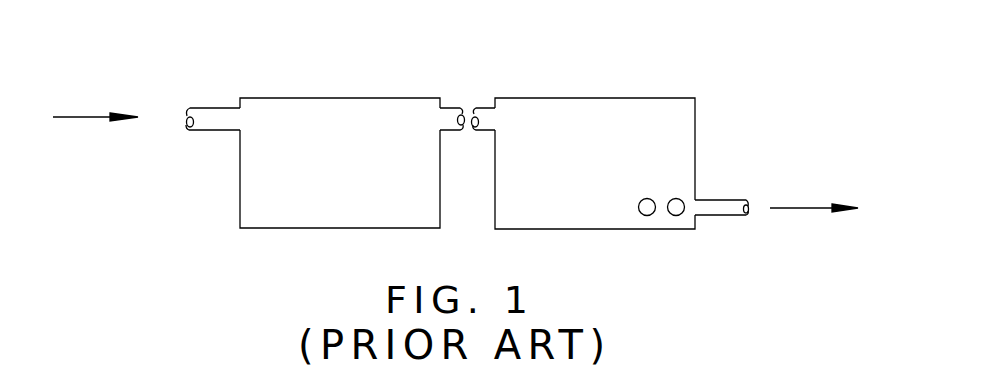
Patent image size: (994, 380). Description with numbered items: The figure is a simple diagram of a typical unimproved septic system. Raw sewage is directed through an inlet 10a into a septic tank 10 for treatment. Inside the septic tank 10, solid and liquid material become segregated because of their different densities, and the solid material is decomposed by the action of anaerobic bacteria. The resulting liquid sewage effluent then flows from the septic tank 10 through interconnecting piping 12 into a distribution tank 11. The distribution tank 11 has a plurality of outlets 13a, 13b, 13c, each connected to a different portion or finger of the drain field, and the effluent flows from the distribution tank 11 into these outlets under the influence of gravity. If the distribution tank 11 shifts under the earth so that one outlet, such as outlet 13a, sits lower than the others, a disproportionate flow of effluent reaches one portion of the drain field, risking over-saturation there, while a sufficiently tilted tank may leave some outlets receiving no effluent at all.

The septic tank 10 is at (343, 98).
The inlet 10a is at (215, 130).
The distribution tank 11 is at (598, 98).
The interconnecting piping 12 is at (476, 97).
The outlet 13a is at (718, 217).
The outlet 13b is at (677, 216).
The outlet 13c is at (643, 217).